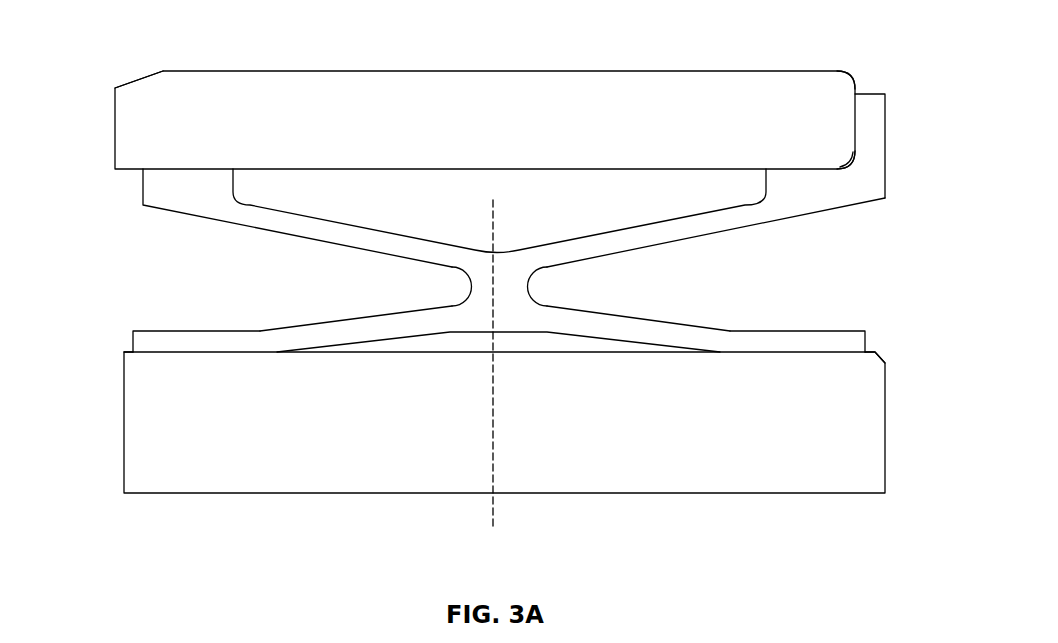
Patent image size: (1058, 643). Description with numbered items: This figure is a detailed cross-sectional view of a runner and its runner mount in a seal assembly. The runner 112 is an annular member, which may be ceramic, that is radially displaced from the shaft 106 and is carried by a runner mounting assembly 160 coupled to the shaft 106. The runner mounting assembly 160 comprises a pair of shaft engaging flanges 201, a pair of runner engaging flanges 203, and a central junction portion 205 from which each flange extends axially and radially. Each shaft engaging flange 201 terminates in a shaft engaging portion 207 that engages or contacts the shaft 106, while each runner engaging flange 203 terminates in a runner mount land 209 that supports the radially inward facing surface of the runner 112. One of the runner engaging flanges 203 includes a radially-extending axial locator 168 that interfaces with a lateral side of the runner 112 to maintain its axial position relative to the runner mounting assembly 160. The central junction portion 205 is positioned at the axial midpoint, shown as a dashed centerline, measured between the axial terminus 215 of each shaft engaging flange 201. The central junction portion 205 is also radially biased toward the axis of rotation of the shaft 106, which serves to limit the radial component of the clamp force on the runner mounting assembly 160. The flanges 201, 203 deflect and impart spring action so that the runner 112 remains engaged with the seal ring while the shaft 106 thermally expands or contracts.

The shaft 106 is at (818, 493).
The runner 112 is at (509, 131).
The runner mounting assembly 160 is at (868, 258).
The axial locator 168 is at (873, 137).
The shaft engaging flange 201 is at (372, 334).
The runner engaging flange 203 is at (264, 222).
The central junction portion 205 is at (478, 294).
The shaft engaging portion 207 is at (150, 352).
The runner mount land 209 is at (168, 168).
The axial terminus 215 is at (133, 336).